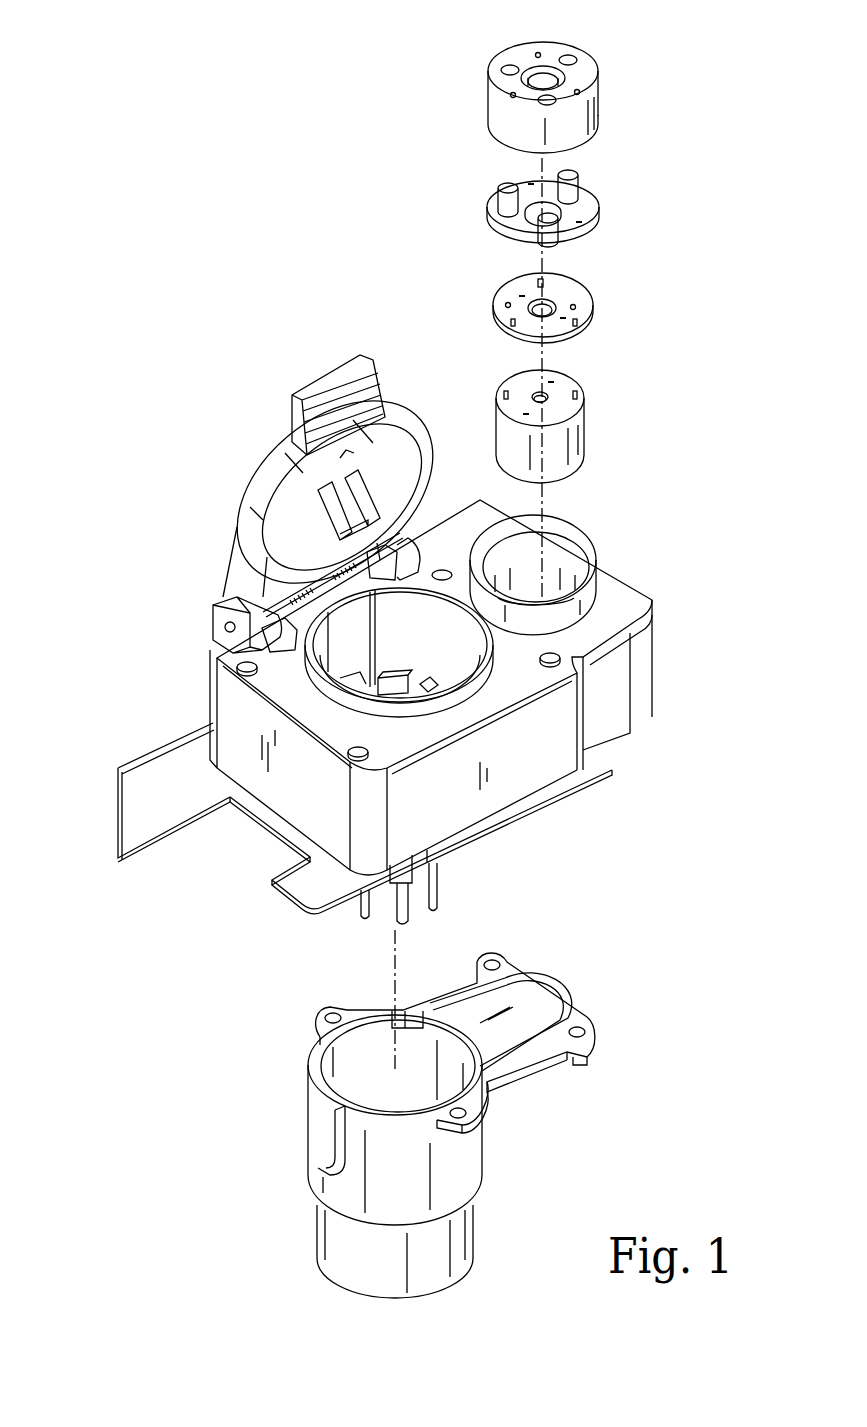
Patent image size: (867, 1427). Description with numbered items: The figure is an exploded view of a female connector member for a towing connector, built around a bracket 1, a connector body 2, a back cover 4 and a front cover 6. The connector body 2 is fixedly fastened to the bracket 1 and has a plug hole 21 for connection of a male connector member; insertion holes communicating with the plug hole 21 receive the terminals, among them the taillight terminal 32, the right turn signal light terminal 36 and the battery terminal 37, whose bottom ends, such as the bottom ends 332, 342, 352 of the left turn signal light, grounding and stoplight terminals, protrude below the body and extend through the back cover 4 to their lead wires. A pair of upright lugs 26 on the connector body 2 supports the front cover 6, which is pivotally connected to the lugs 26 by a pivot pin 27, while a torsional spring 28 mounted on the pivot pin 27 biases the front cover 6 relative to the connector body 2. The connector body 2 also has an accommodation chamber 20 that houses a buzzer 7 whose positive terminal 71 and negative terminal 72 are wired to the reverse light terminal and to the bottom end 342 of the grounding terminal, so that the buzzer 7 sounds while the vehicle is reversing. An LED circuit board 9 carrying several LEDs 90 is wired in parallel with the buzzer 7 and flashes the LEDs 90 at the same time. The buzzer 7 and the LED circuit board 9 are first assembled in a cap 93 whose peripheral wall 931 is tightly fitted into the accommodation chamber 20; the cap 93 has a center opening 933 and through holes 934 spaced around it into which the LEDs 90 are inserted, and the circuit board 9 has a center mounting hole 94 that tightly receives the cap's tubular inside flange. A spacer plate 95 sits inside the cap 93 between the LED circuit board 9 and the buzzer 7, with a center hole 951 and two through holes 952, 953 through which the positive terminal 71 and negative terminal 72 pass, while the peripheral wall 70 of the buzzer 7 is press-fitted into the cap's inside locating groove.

The bracket 1 is at (98, 804).
The connector body 2 is at (394, 655).
The back cover 4 is at (285, 1086).
The front cover 6 is at (258, 448).
The buzzer 7 is at (556, 423).
The peripheral wall 70 is at (580, 451).
The positive terminal 71 is at (503, 395).
The negative terminal 72 is at (578, 395).
The LED circuit board 9 is at (553, 206).
The LEDs (light emitting diodes) 90 is at (572, 182).
The cap 93 is at (548, 85).
The peripheral wall 931 is at (598, 112).
The center opening 933 is at (560, 80).
The through holes 934 is at (585, 58).
The center mounting hole 94 is at (535, 214).
The spacer plate 95 is at (550, 317).
The center hole 951 is at (556, 308).
The through hole 952 is at (505, 305).
The through hole 953 is at (575, 306).
The accommodation chamber 20 is at (567, 560).
The plug hole 21 is at (377, 597).
The upright lugs 26 is at (298, 544).
The pivot pin 27 is at (225, 627).
The torsional spring 28 is at (340, 573).
The taillight terminal 32 is at (358, 683).
The right turn signal light terminal 36 is at (433, 685).
The battery terminal 37 is at (392, 675).
The bottom end of left turn signal light terminal 332 is at (365, 920).
The bottom end of grounding terminal 342 is at (402, 926).
The bottom end of stoplight terminal 352 is at (437, 910).